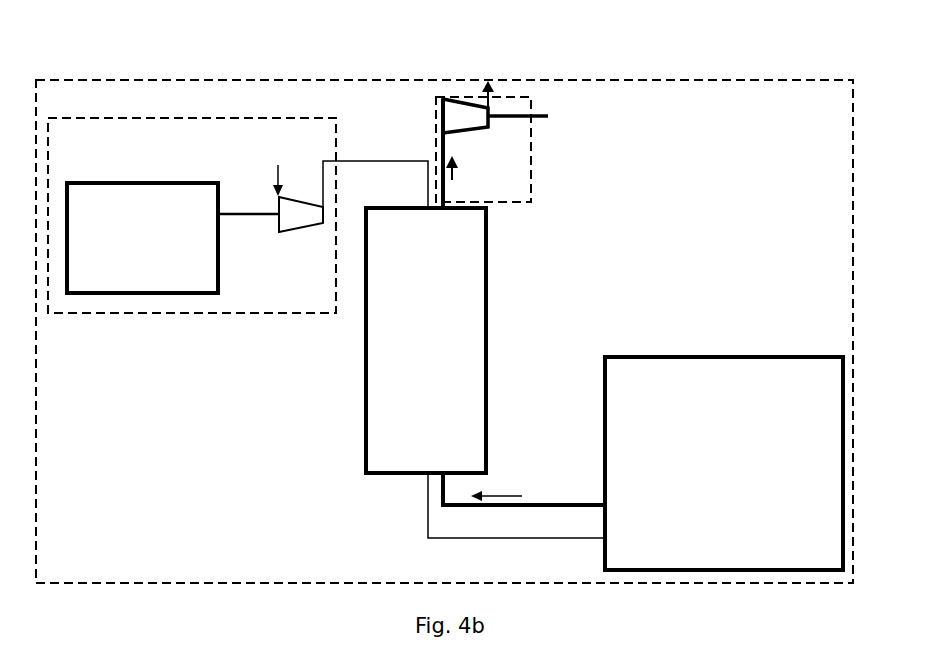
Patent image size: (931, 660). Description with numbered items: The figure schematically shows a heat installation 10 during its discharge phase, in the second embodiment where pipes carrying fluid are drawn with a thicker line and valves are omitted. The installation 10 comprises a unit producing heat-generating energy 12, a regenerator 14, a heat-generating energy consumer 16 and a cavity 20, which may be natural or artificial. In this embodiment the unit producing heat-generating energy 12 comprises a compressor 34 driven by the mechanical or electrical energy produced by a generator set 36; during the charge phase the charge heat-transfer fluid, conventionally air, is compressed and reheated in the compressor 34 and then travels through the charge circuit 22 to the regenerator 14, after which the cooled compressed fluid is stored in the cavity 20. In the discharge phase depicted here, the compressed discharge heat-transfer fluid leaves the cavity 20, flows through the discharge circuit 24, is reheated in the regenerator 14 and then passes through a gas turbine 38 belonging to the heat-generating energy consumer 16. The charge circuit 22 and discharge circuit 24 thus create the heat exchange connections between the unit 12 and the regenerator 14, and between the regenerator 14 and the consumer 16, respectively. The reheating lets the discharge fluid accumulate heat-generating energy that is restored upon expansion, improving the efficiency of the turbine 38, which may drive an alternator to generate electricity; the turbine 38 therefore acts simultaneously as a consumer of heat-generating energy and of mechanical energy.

The heat installation 10 is at (762, 80).
The unit producing heat-generating energy 12 is at (90, 117).
The regenerator 14 is at (426, 340).
The heat-generating energy consumer 16 is at (505, 97).
The cavity 20 is at (724, 463).
The charge circuit 22 is at (403, 156).
The discharge circuit 24 is at (561, 500).
The compressor 34 is at (297, 213).
The generator set 36 is at (142, 238).
The gas turbine 38 is at (453, 113).